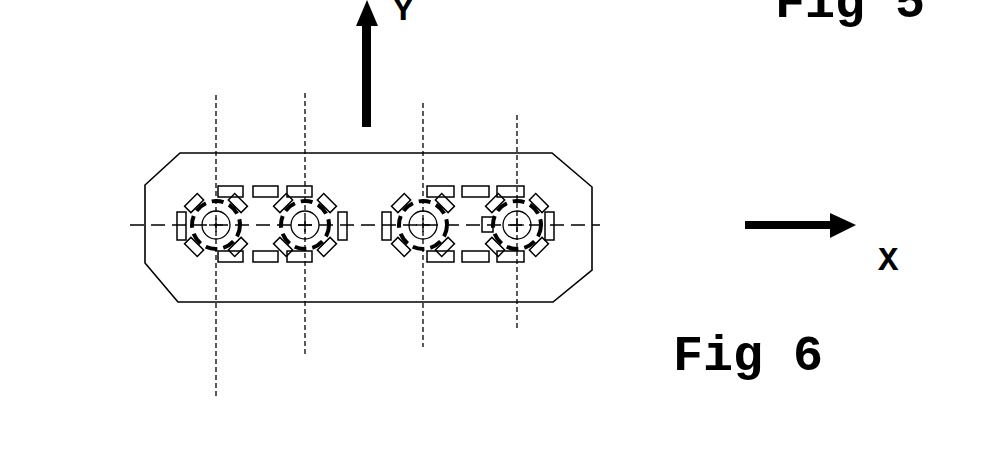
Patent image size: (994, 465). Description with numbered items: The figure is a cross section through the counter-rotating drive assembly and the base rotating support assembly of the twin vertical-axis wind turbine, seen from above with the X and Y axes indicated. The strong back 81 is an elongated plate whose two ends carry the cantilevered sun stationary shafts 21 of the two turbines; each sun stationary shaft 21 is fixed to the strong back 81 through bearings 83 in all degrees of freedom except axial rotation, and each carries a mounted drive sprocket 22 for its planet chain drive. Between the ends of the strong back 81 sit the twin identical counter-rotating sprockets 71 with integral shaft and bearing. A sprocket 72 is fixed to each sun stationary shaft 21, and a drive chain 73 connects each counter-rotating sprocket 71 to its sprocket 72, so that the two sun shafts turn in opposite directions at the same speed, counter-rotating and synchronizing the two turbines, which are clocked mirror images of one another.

The sun stationary shaft 21 is at (216, 225).
The drive sprocket 22 is at (359, 168).
The counter-rotating sprocket with integral shaft and bearing 71 is at (305, 224).
The sprocket 72 is at (242, 237).
The drive chain 73 is at (267, 184).
The strong back 81 is at (143, 248).
The bearing 83 is at (359, 177).